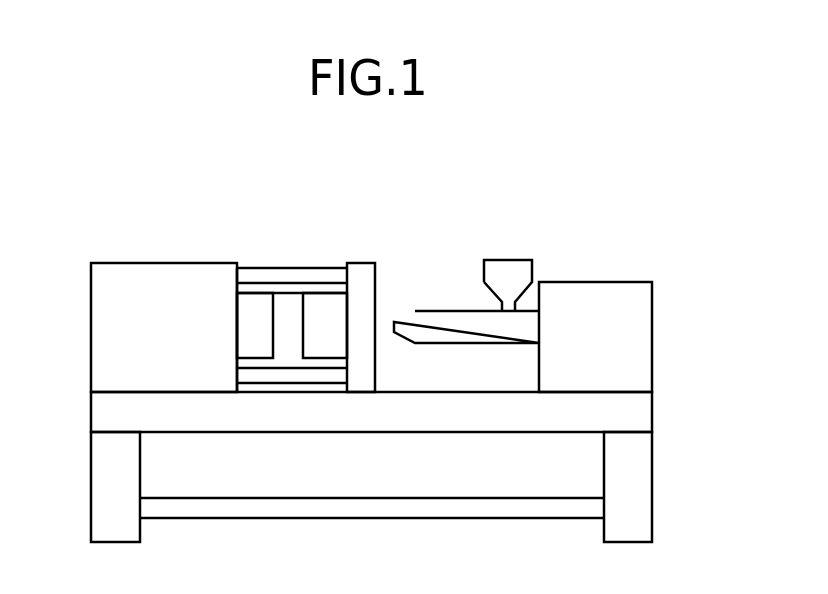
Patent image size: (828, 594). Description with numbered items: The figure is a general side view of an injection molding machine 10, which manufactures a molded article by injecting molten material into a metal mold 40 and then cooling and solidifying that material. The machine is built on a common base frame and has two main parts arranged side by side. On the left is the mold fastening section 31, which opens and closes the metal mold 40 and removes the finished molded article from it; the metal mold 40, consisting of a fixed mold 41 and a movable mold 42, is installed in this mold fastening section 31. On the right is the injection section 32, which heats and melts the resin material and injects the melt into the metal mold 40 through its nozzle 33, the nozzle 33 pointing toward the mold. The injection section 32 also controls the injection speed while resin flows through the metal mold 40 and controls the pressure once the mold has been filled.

The injection molding machine 10 is at (133, 197).
The mold fastening section 31 is at (110, 262).
The injection section 32 is at (608, 282).
The nozzle 33 is at (397, 320).
The metal mold 40 is at (306, 277).
The fixed mold 41 is at (317, 307).
The movable mold 42 is at (257, 308).